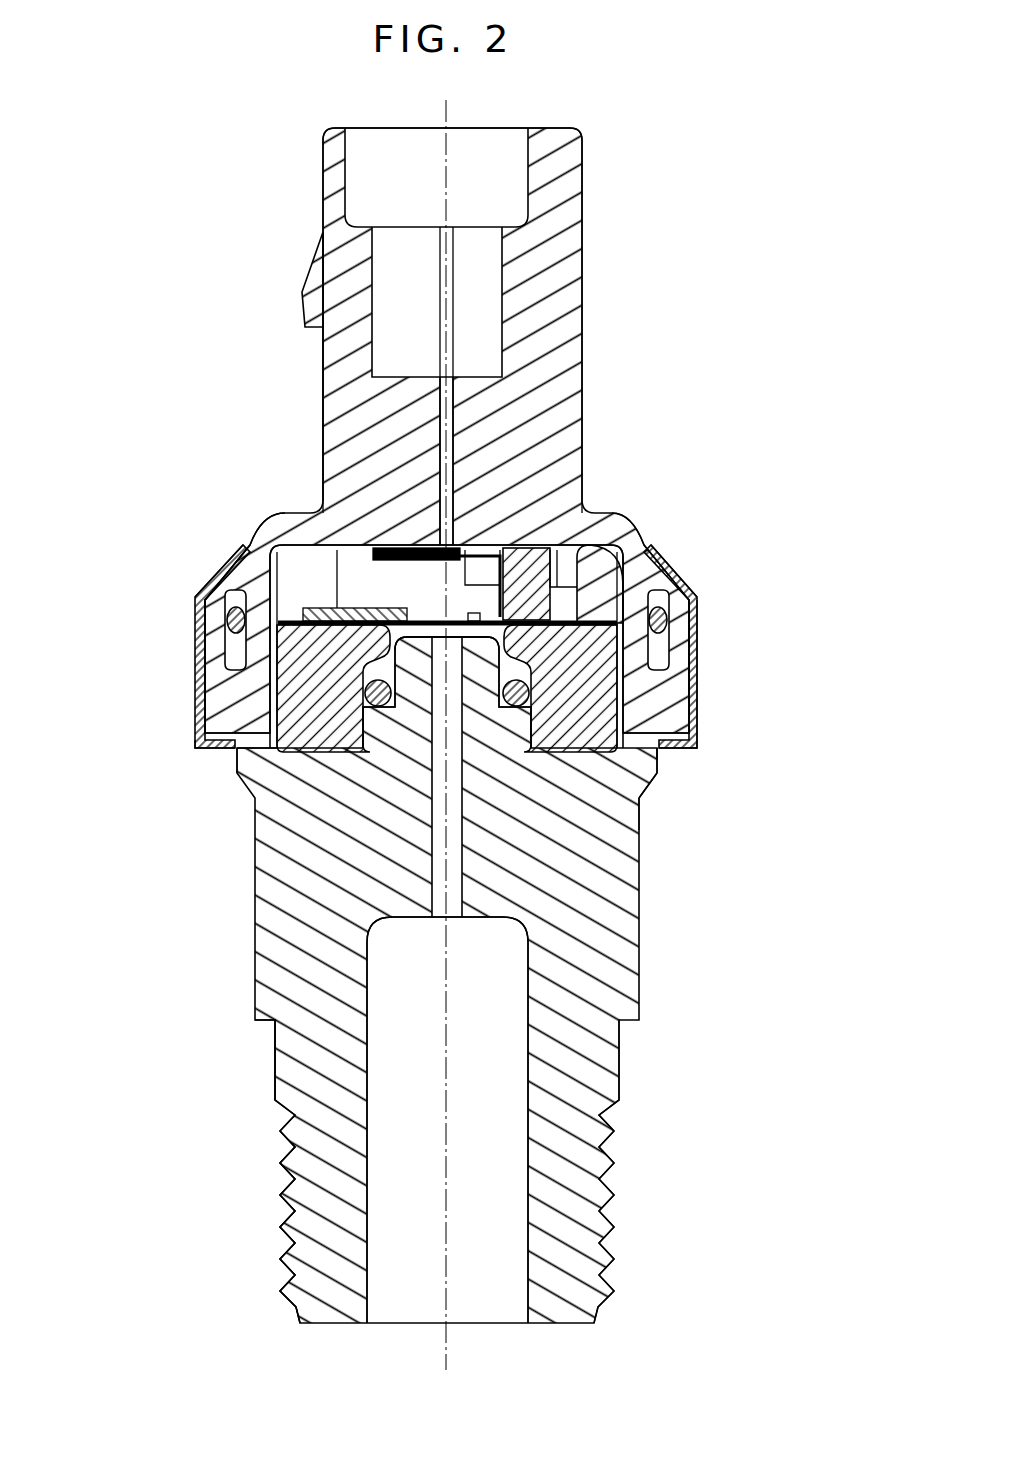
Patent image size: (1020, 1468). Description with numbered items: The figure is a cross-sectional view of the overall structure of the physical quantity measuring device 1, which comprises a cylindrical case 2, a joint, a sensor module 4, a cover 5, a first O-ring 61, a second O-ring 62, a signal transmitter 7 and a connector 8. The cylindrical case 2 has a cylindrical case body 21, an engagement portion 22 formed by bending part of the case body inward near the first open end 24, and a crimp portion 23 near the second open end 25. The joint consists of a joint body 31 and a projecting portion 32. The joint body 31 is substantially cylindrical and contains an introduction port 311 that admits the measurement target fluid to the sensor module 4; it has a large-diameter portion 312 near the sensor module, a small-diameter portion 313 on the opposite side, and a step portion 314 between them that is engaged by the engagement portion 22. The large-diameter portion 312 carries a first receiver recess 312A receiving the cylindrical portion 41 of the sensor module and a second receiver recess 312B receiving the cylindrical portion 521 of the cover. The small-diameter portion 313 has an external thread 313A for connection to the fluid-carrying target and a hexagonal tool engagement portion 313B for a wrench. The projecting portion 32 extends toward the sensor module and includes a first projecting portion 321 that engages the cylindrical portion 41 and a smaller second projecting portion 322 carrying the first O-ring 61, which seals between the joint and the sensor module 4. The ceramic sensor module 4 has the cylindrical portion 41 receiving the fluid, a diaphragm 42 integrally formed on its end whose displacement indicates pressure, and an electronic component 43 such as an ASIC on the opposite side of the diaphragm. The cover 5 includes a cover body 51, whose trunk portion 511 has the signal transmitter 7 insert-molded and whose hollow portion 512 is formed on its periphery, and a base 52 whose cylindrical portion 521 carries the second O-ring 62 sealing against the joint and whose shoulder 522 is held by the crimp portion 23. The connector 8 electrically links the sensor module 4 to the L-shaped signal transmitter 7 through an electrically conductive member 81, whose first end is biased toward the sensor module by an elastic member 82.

The physical quantity measuring device 1 is at (622, 234).
The cylindrical case 2 is at (456, 612).
The cylindrical case body 21 is at (697, 706).
The engagement portion 22 is at (690, 752).
The crimp portion 23 is at (670, 572).
The first open end 24 is at (215, 746).
The second open end 25 is at (242, 547).
The joint body 31 is at (437, 1013).
The introduction port 311 is at (527, 1265).
The large-diameter portion 312 is at (529, 761).
The first receiver recess 312A is at (608, 772).
The second receiver recess 312B is at (657, 692).
The small-diameter portion 313 is at (336, 1141).
The external thread 313A is at (290, 1098).
The tool engagement portion 313B is at (257, 960).
The step portion 314 is at (666, 756).
The projecting portion 32 is at (301, 736).
The first projecting portion 321 is at (392, 690).
The second projecting portion 322 is at (250, 752).
The sensor module 4 is at (477, 621).
The cylindrical portion 41 is at (640, 716).
The diaphragm 42 is at (606, 566).
The electronic component 43 is at (292, 582).
The cover 5 is at (382, 430).
The cover body 51 is at (380, 320).
The trunk portion 511 is at (345, 420).
The hollow portion 512 is at (318, 300).
The base 52 is at (382, 576).
The cylindrical portion 521 is at (257, 650).
The shoulder 522 is at (244, 556).
The first O-ring 61 is at (378, 707).
The second O-ring 62 is at (229, 620).
The signal transmitter 7 is at (455, 290).
The connector 8 is at (497, 524).
The electrically conductive member 81 is at (486, 554).
The elastic member 82 is at (504, 600).